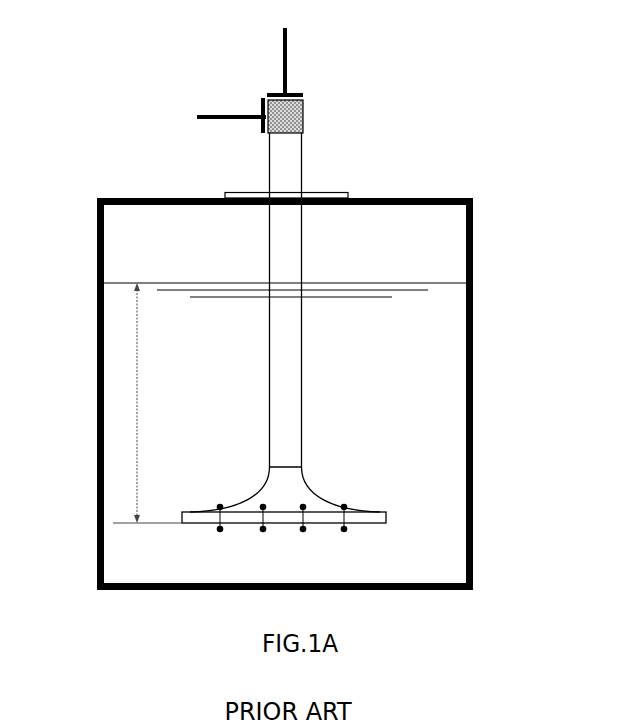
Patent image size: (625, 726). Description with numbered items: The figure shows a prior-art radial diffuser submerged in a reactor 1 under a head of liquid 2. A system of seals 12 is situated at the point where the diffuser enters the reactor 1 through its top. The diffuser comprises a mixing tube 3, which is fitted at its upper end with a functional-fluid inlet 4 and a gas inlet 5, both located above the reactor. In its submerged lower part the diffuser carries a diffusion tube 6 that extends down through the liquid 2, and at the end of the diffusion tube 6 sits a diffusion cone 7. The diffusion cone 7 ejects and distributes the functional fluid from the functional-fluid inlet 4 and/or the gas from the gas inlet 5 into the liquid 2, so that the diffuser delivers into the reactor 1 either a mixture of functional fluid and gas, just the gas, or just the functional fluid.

The reactor 1 is at (97, 200).
The liquid 2 is at (124, 378).
The mixing tube 3 is at (305, 118).
The functional-fluid inlet 4 is at (283, 93).
The gas inlet 5 is at (204, 116).
The diffusion tube 6 is at (287, 332).
The diffusion cone 7 is at (296, 493).
The system of seals 12 is at (225, 196).